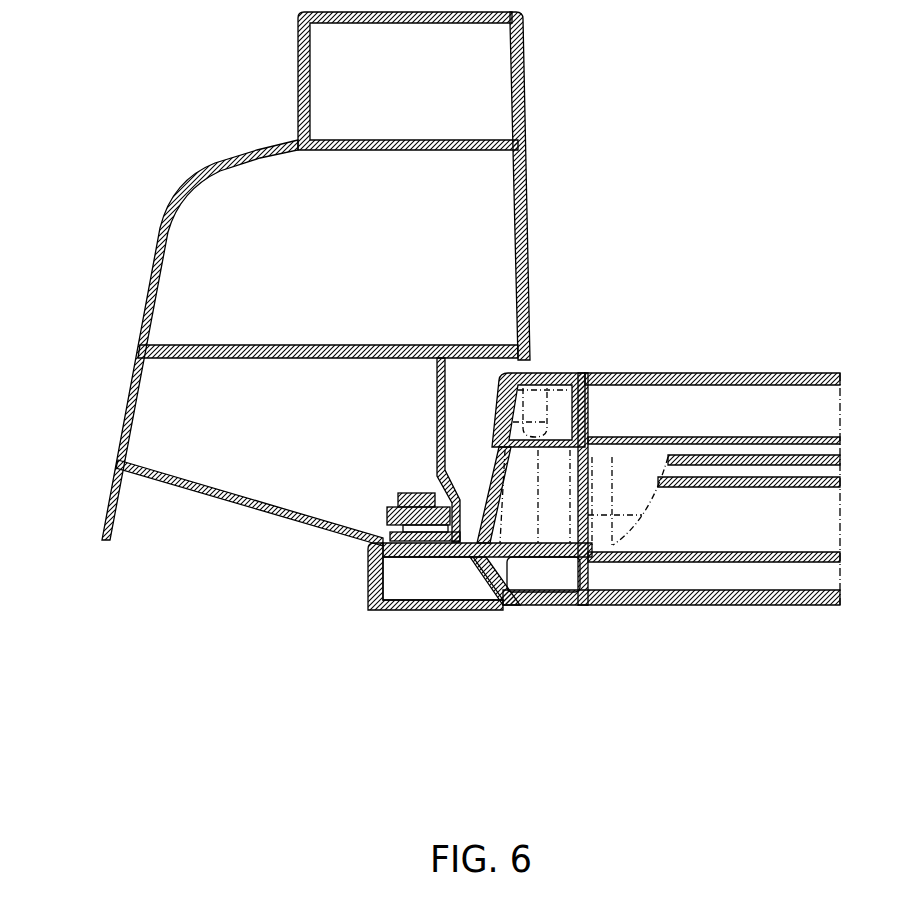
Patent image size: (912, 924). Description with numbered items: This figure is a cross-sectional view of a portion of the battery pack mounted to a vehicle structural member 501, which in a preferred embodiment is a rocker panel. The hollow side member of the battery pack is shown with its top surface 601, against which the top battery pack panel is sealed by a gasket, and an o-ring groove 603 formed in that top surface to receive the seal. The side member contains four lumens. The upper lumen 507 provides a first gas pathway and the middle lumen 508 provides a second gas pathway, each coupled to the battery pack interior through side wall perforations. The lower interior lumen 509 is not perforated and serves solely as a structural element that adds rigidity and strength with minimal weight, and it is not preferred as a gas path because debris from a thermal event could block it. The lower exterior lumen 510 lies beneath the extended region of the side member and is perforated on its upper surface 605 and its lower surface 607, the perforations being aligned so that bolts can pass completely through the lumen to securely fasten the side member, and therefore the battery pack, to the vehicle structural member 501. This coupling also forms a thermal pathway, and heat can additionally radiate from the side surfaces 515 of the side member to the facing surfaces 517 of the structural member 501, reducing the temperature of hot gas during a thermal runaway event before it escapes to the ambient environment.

The vehicle structural member 501 is at (117, 208).
The surfaces of the structural member 517 is at (530, 368).
The o-ring groove 603 is at (452, 397).
The side surfaces of side members 515 is at (480, 435).
The top surface of side members 601 is at (558, 384).
The upper lumen 507 is at (557, 425).
The middle lumen 508 is at (520, 510).
The lower interior lumen 509 is at (562, 586).
The lower exterior lumen 510 is at (442, 589).
The lower surface 607 is at (407, 617).
The upper surface 605 is at (388, 535).